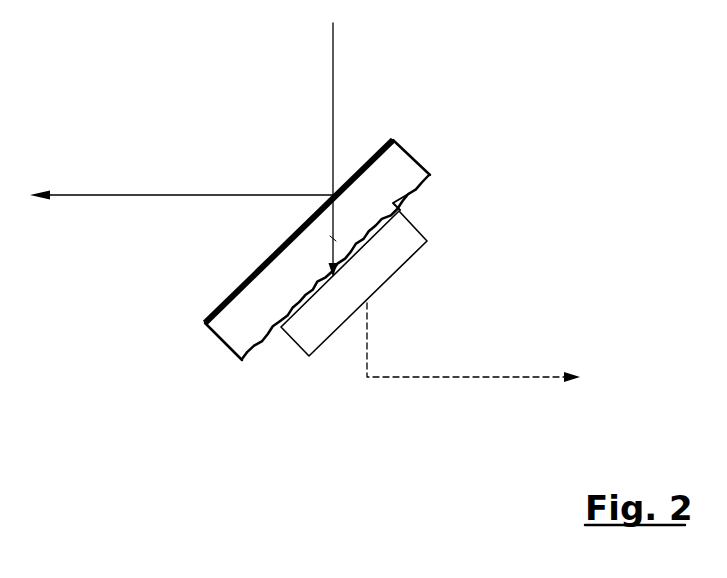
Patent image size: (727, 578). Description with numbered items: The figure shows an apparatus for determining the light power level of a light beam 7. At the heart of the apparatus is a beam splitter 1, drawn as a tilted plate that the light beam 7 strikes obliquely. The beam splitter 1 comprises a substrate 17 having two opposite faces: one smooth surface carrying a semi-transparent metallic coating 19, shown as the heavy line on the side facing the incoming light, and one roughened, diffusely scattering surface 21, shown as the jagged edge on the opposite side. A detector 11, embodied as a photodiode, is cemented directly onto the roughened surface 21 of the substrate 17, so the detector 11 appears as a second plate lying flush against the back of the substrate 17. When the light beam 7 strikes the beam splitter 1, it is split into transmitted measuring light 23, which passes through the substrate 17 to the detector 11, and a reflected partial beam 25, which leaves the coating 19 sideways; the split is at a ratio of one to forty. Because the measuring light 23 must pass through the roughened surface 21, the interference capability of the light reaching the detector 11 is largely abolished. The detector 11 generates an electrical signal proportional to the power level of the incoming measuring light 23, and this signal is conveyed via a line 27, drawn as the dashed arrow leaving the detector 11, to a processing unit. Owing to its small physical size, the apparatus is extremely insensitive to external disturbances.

The beam splitter 1 is at (440, 133).
The light beam 7 is at (335, 79).
The detector 11 is at (322, 328).
The substrate 17 is at (230, 328).
The semi-transparent metallic coating 19 is at (367, 157).
The roughened surface 21 is at (403, 203).
The transmitted measuring light 23 is at (332, 238).
The reflected partial beam 25 is at (167, 195).
The line 27 is at (430, 377).